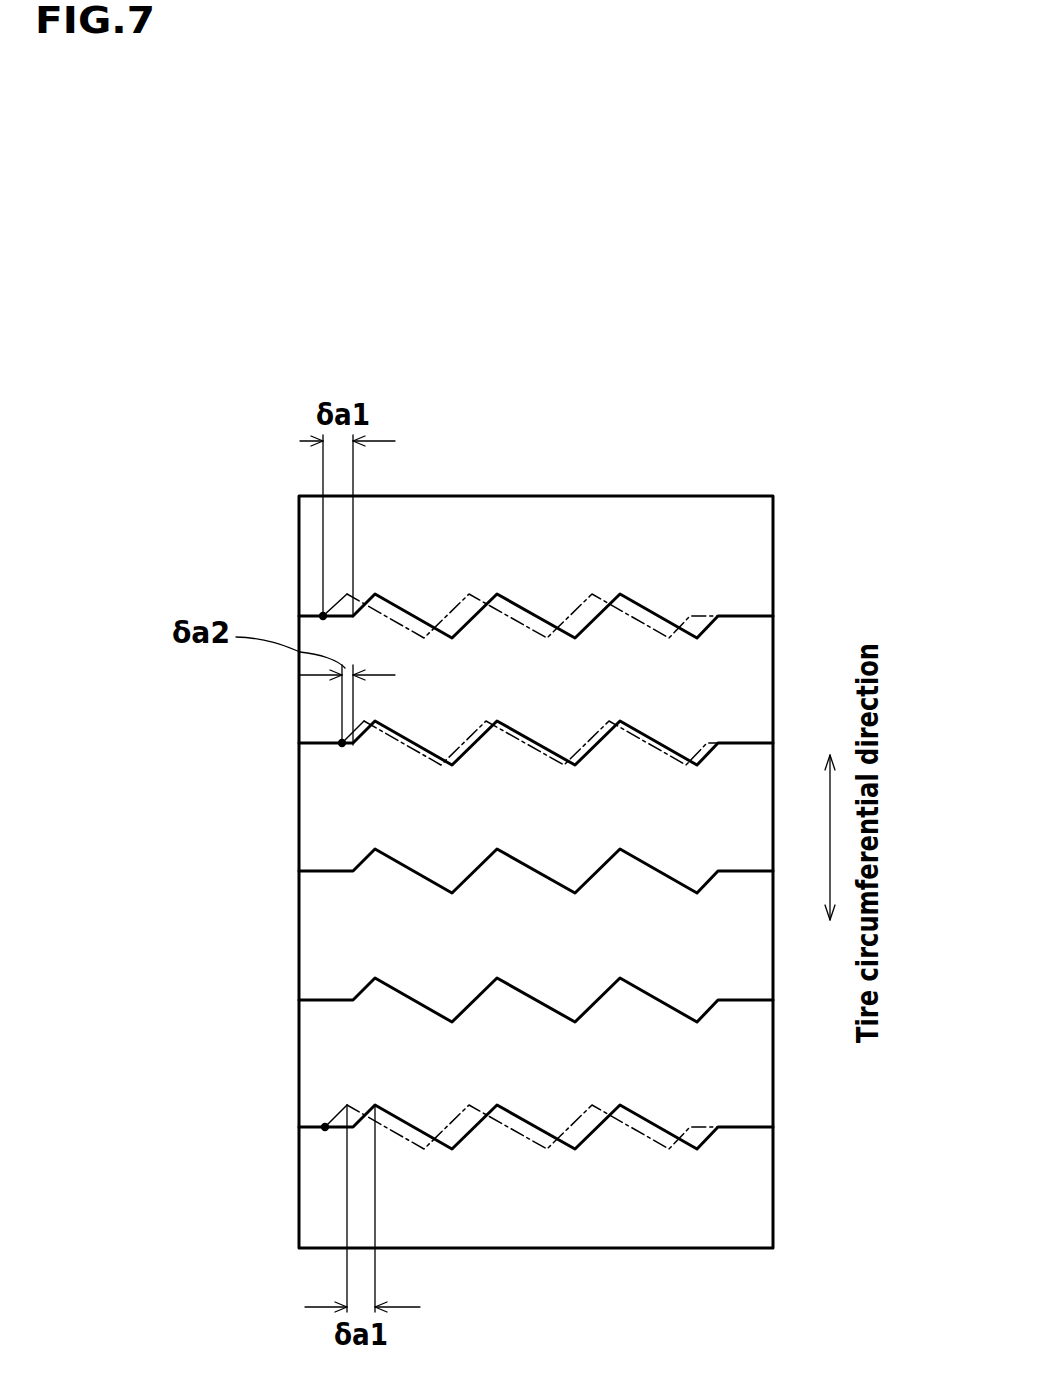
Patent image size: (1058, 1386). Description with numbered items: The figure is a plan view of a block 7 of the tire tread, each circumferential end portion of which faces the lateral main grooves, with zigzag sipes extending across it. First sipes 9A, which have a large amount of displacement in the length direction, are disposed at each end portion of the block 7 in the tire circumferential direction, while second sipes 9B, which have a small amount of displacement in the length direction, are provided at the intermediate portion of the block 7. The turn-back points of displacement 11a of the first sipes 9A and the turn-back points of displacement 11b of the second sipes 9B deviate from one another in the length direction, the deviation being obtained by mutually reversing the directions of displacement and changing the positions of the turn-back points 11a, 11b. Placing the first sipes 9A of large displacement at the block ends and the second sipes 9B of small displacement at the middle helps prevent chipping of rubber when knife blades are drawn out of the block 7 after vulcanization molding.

The block 7 is at (808, 575).
The first sipes 9A is at (563, 585).
The second sipes 9B is at (300, 748).
The turn-back points of displacement 11a is at (323, 616).
The turn-back points of displacement 11b is at (342, 743).